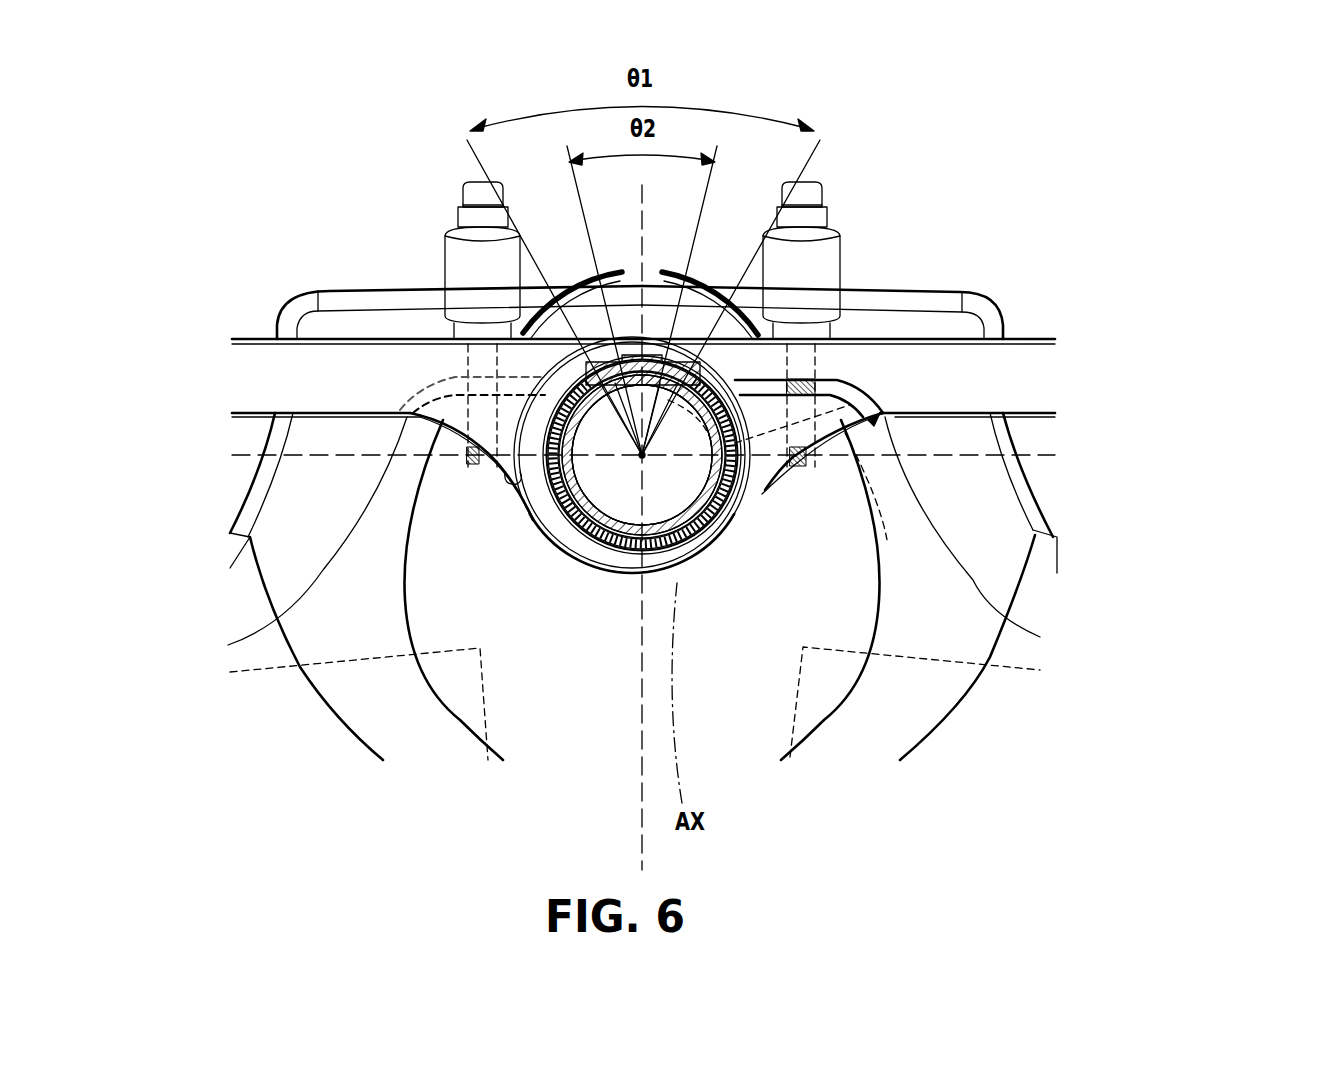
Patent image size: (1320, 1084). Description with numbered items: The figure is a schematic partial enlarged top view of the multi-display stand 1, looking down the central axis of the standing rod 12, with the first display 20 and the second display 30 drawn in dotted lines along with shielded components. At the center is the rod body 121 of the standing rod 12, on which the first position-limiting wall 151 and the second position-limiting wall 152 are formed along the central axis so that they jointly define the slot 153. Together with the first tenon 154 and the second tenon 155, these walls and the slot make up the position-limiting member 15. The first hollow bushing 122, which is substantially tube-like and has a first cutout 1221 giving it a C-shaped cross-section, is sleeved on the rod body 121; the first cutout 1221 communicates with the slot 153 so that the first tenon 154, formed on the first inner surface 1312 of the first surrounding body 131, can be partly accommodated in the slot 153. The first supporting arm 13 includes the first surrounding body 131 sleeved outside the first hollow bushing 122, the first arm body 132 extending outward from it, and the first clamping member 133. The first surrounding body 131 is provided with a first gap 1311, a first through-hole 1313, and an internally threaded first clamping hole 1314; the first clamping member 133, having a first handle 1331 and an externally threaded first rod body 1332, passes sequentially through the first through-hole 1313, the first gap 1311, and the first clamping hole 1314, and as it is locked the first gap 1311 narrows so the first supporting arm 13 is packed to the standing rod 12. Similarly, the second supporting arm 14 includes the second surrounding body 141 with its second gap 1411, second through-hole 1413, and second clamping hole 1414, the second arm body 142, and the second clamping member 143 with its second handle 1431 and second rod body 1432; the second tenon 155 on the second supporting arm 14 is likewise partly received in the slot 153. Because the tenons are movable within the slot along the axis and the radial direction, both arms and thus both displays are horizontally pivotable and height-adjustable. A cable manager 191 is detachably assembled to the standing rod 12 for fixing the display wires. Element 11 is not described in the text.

The multi-display stand 1 is at (283, 150).
The frame leg 11 is at (238, 597).
The standing rod 12 is at (642, 455).
The rod body 121 is at (585, 567).
The first hollow bushing 122 is at (725, 550).
The first supporting arm 13 is at (1060, 258).
The first surrounding body 131 is at (790, 505).
The first gap 1311 is at (1012, 632).
The first inner surface 1312 is at (775, 553).
The first through-hole 1313 is at (790, 360).
The first clamping hole 1314 is at (887, 540).
The first arm body 132 is at (1048, 325).
The first clamping member 133 is at (858, 188).
The first handle 1331 is at (802, 213).
The first rod body 1332 is at (852, 413).
The second supporting arm 14 is at (262, 257).
The second surrounding body 141 is at (520, 553).
The second gap 1411 is at (250, 642).
The second through-hole 1413 is at (470, 360).
The second clamping hole 1414 is at (427, 437).
The second arm body 142 is at (237, 322).
The second clamping member 143 is at (422, 225).
The second handle 1431 is at (472, 213).
The second rod body 1432 is at (477, 463).
The position-limiting member 15 is at (1200, 242).
The first position-limiting wall 151 is at (628, 355).
The second position-limiting wall 152 is at (690, 365).
The slot 153 is at (568, 254).
The first tenon 154 is at (660, 362).
The second tenon 155 is at (862, 427).
The cable manager 191 is at (760, 310).
The first cutout 1221 is at (598, 355).
The first display 20 is at (1030, 672).
The second display 30 is at (266, 672).